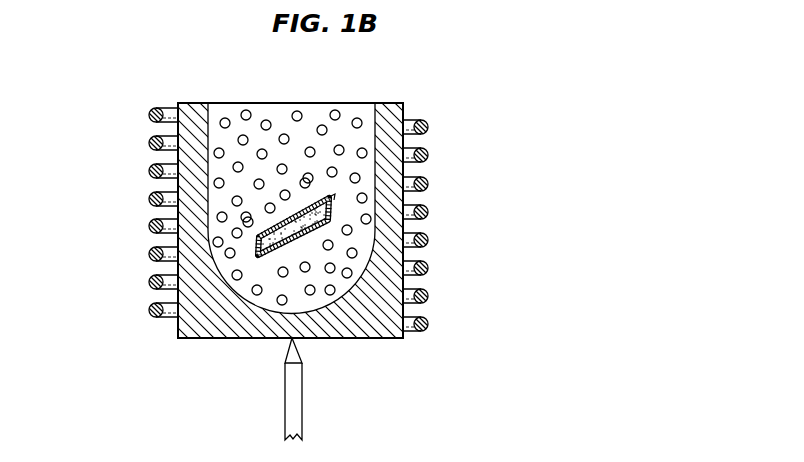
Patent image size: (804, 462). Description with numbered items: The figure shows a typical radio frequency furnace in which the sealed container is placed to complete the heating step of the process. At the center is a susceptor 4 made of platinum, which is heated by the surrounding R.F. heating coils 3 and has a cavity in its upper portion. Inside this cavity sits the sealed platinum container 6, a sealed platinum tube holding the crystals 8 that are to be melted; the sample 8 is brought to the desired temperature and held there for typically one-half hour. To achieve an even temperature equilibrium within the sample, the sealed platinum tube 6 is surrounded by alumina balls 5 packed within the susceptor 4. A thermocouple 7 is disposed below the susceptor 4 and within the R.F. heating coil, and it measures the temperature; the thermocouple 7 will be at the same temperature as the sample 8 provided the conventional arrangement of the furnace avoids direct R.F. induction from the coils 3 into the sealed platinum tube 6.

The R.F. heating coils 3 is at (151, 170).
The susceptor 4 is at (179, 336).
The alumina balls 5 is at (356, 257).
The sealed platinum container 6 is at (334, 208).
The thermocouple 7 is at (295, 390).
The crystals 8 is at (275, 238).